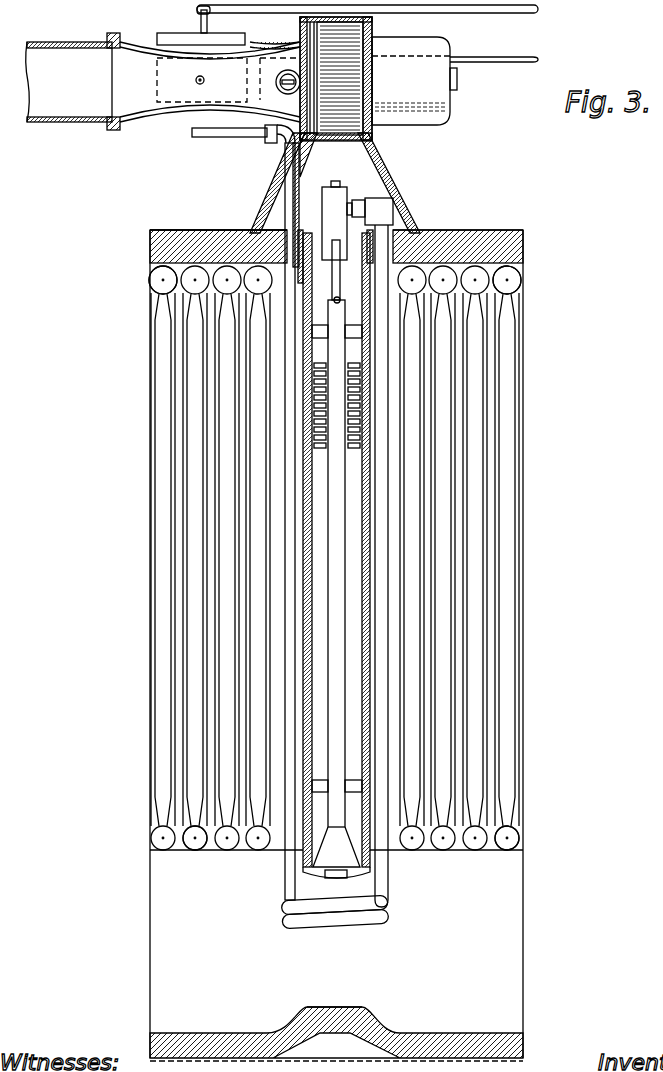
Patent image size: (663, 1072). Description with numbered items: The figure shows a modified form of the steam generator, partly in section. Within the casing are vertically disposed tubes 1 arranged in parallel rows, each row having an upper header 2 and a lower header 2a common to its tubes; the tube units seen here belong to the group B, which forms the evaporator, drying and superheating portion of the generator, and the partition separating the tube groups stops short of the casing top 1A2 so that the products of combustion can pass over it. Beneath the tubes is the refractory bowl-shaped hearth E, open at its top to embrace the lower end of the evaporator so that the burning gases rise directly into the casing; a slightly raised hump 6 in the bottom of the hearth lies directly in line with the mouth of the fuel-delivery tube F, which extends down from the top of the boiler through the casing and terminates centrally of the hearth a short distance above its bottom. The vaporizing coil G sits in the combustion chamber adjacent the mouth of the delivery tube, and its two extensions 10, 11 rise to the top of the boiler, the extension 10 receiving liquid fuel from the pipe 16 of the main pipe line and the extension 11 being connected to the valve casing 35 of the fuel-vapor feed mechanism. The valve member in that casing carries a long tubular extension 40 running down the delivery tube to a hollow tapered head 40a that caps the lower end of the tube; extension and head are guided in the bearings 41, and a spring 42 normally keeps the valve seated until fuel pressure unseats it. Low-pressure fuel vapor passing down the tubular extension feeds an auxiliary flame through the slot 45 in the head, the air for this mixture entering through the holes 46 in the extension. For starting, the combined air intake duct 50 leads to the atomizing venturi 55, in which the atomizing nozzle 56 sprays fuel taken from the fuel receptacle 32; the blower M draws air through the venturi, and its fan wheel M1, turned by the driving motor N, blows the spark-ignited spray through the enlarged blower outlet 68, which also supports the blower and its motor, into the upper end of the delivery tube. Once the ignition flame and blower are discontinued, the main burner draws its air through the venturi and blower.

The tube group B is at (427, 678).
The bowl-shaped hearth E is at (487, 986).
The hump 6 is at (350, 1007).
The holes 46 is at (485, 240).
The tubes 1 is at (200, 705).
The upper header 2 is at (193, 282).
The lower header 2a is at (228, 840).
The top of the casing 1A2 is at (187, 232).
The fuel-delivery tube F is at (370, 600).
The tubular extension 40 is at (335, 748).
The tapered head 40a is at (340, 857).
The bearings 41 is at (370, 337).
The spring 42 is at (357, 413).
The burner opening or slot 45 is at (327, 878).
The vaporizer extension 10 is at (288, 188).
The vaporizer extension 11 is at (393, 228).
The valve casing 35 is at (338, 227).
The vaporizing coil G is at (333, 927).
The blower outlet 68 is at (388, 168).
The pipe 16 is at (226, 137).
The fan wheel M1 is at (365, 141).
The motor N is at (414, 81).
The blower M is at (367, 33).
The air intake duct 50 is at (76, 103).
The atomizing venturi 55 is at (148, 100).
The chamber or receptacle 32 is at (213, 43).
The atomizing nozzle 56 is at (196, 80).